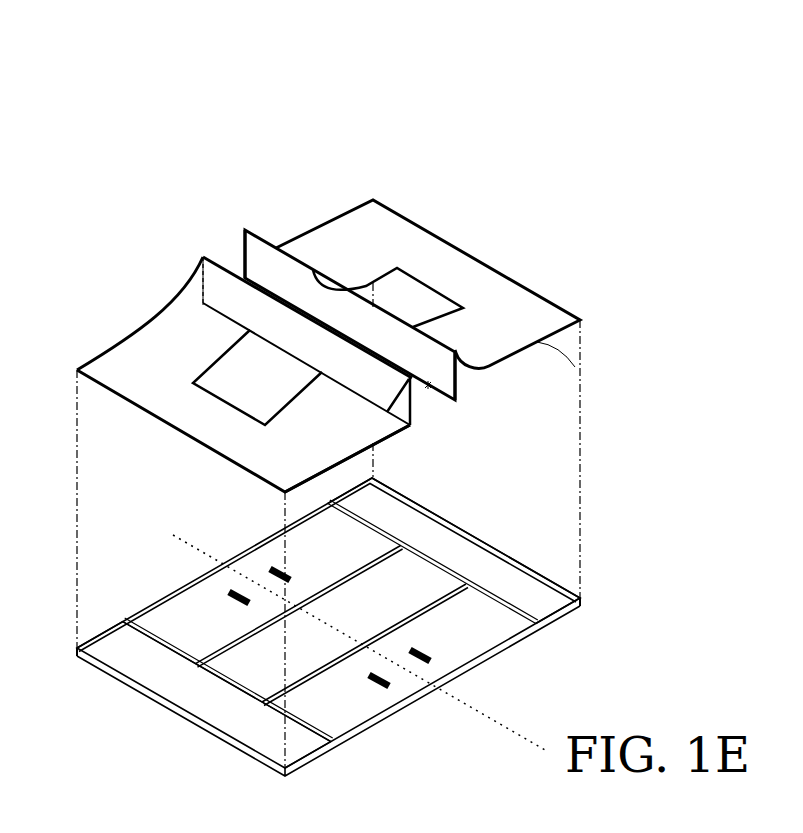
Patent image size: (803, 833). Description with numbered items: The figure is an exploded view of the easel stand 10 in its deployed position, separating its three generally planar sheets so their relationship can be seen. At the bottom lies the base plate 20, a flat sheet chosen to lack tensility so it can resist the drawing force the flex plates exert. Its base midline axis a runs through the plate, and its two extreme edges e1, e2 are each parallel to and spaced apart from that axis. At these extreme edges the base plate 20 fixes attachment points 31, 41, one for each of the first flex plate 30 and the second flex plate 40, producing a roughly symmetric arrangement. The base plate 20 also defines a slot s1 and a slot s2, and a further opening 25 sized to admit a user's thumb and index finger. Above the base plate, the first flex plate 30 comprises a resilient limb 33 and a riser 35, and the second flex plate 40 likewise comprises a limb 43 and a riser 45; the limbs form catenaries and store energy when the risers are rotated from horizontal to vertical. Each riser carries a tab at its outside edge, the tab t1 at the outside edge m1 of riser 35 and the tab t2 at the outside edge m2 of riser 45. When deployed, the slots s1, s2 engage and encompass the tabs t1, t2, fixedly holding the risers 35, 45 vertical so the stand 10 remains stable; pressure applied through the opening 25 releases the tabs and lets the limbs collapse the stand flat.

The stand 10 is at (165, 242).
The base plate 20 is at (338, 557).
The opening 25 is at (418, 620).
The first flex plate 30 is at (96, 391).
The attachment point 31 is at (135, 665).
The limb 33 is at (353, 440).
The riser 35 is at (316, 350).
The second flex plate 40 is at (388, 197).
The attachment point 41 is at (477, 566).
The limb 43 is at (466, 286).
The riser 45 is at (425, 361).
The tab t1 is at (248, 330).
The tab t2 is at (284, 298).
The outside edge m1 is at (411, 423).
The outside edge m2 is at (457, 400).
The extreme edge e1 is at (86, 648).
The extreme edge e2 is at (584, 603).
The base midline axis a is at (200, 548).
The slot s1 is at (380, 691).
The slot s2 is at (428, 661).